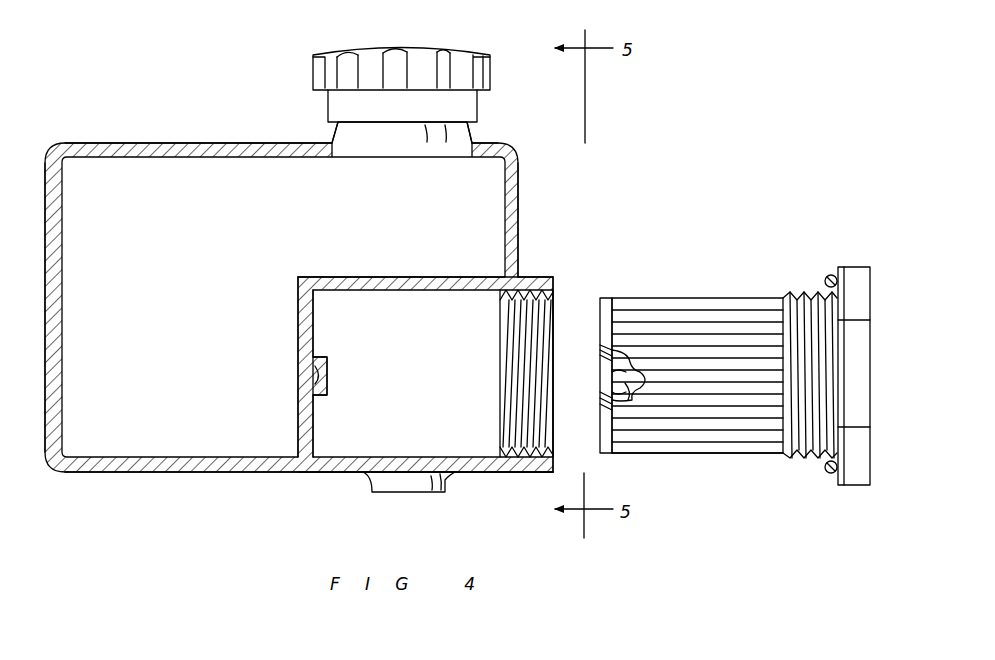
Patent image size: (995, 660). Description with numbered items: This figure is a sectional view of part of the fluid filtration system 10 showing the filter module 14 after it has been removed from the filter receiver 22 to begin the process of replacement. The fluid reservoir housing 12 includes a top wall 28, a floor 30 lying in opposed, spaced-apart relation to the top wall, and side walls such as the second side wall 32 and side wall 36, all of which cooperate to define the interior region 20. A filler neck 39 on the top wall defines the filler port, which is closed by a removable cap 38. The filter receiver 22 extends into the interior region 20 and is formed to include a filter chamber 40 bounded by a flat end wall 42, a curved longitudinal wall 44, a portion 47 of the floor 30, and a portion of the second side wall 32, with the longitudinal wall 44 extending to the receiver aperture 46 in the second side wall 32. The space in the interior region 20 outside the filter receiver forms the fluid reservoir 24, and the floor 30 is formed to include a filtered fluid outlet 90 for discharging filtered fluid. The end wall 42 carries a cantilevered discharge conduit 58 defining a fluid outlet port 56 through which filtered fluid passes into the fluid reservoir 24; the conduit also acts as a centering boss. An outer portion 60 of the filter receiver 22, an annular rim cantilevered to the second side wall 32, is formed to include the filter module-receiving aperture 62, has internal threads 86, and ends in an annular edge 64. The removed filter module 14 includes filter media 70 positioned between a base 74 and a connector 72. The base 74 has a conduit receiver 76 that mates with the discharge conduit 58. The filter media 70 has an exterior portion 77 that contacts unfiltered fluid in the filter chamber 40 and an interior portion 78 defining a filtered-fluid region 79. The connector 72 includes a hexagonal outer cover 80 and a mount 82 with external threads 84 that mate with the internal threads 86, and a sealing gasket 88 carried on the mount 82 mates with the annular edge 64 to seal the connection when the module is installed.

The fluid filtration system 10 is at (695, 138).
The fluid reservoir housing 12 is at (123, 141).
The filter module 14 is at (738, 262).
The interior region 20 is at (487, 219).
The filter receiver 22 is at (350, 269).
The fluid reservoir 24 is at (130, 443).
The top wall 28 is at (263, 142).
The floor 30 is at (190, 478).
The second side wall 32 is at (521, 225).
The side wall 36 is at (47, 191).
The removable cap 38 is at (498, 57).
The filler neck 39 is at (455, 131).
The filter chamber 40 is at (469, 438).
The end wall 42 is at (300, 324).
The longitudinal wall 44 is at (430, 277).
The receiver aperture 46 is at (519, 270).
The portion of floor 47 is at (350, 472).
The fluid outlet port 56 is at (330, 381).
The discharge conduit 58 is at (320, 357).
The outer portion 60 is at (536, 470).
The filter module-receiving aperture 62 is at (565, 306).
The annular edge 64 is at (556, 457).
The filter media 70 is at (737, 460).
The connector 72 is at (815, 251).
The base 74 is at (604, 313).
The conduit receiver 76 is at (601, 392).
The exterior portion 77 is at (689, 455).
The interior portion 78 is at (660, 397).
The filtered-fluid region 79 is at (625, 378).
The outer cover 80 is at (853, 493).
The mount 82 is at (792, 473).
The external threads 84 is at (502, 292).
The internal threads 86 is at (795, 341).
The sealing gasket 88 is at (828, 476).
The filtered fluid outlet 90 is at (403, 487).